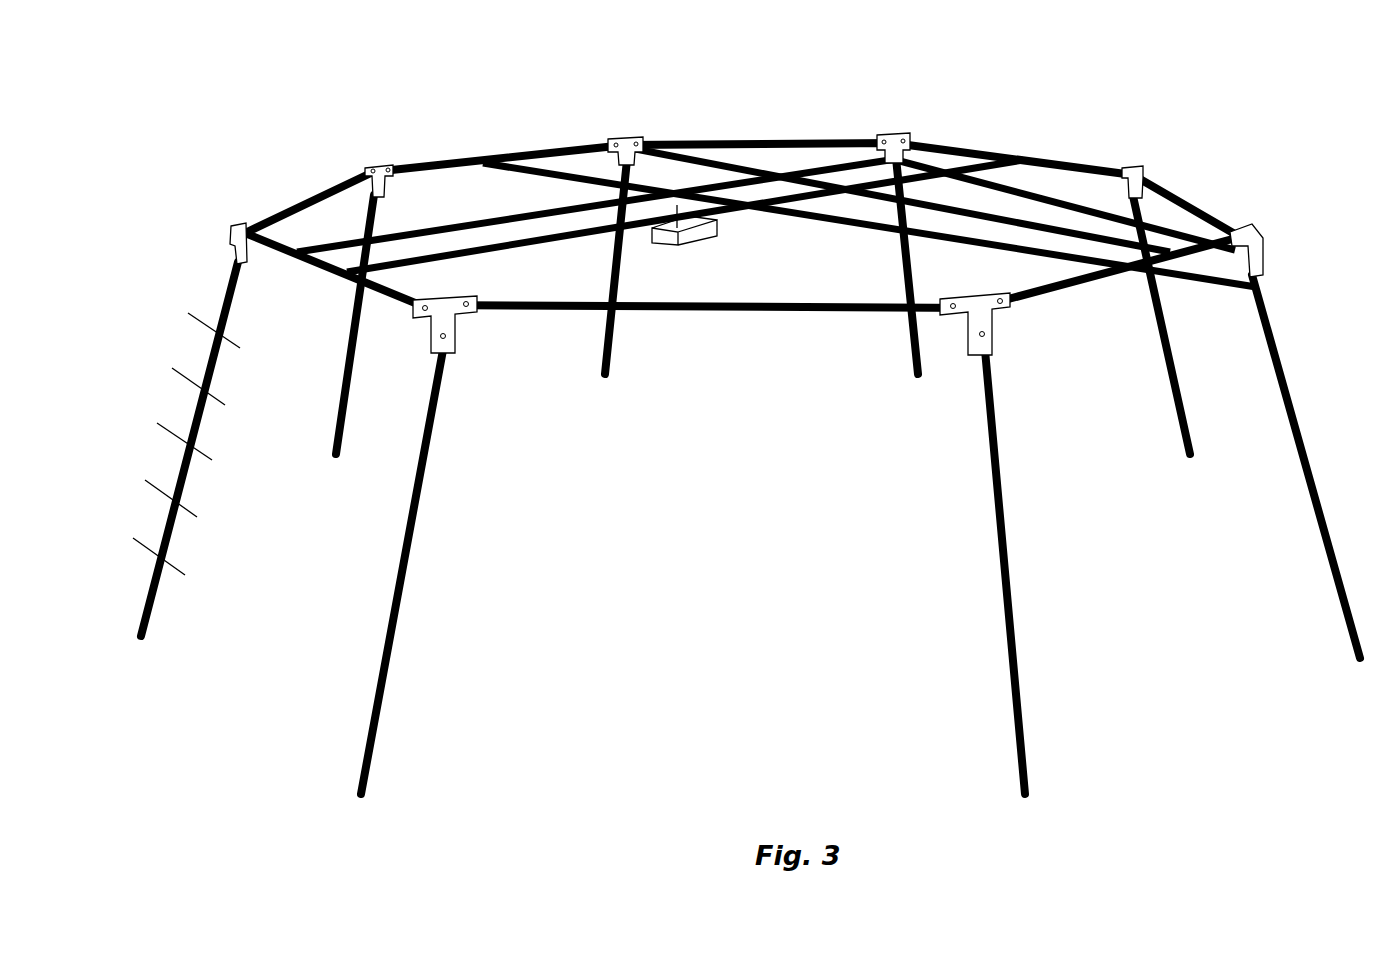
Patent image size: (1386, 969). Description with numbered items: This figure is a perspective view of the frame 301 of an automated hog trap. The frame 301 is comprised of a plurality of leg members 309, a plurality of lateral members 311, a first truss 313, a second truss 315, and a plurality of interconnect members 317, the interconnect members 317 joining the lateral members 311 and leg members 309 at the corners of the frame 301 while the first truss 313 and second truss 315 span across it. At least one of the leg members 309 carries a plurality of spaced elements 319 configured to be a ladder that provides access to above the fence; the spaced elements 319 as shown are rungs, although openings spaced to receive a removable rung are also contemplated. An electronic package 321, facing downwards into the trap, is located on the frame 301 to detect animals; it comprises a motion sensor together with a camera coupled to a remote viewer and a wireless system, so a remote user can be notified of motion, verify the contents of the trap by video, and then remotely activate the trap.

The frame 301 is at (235, 84).
The leg member 309 is at (1276, 316).
The lateral member 311 is at (424, 150).
The first truss 313 is at (573, 201).
The second truss 315 is at (1013, 209).
The interconnect member 317 is at (640, 137).
The spaced elements 319 is at (146, 360).
The electronic package 321 is at (694, 242).